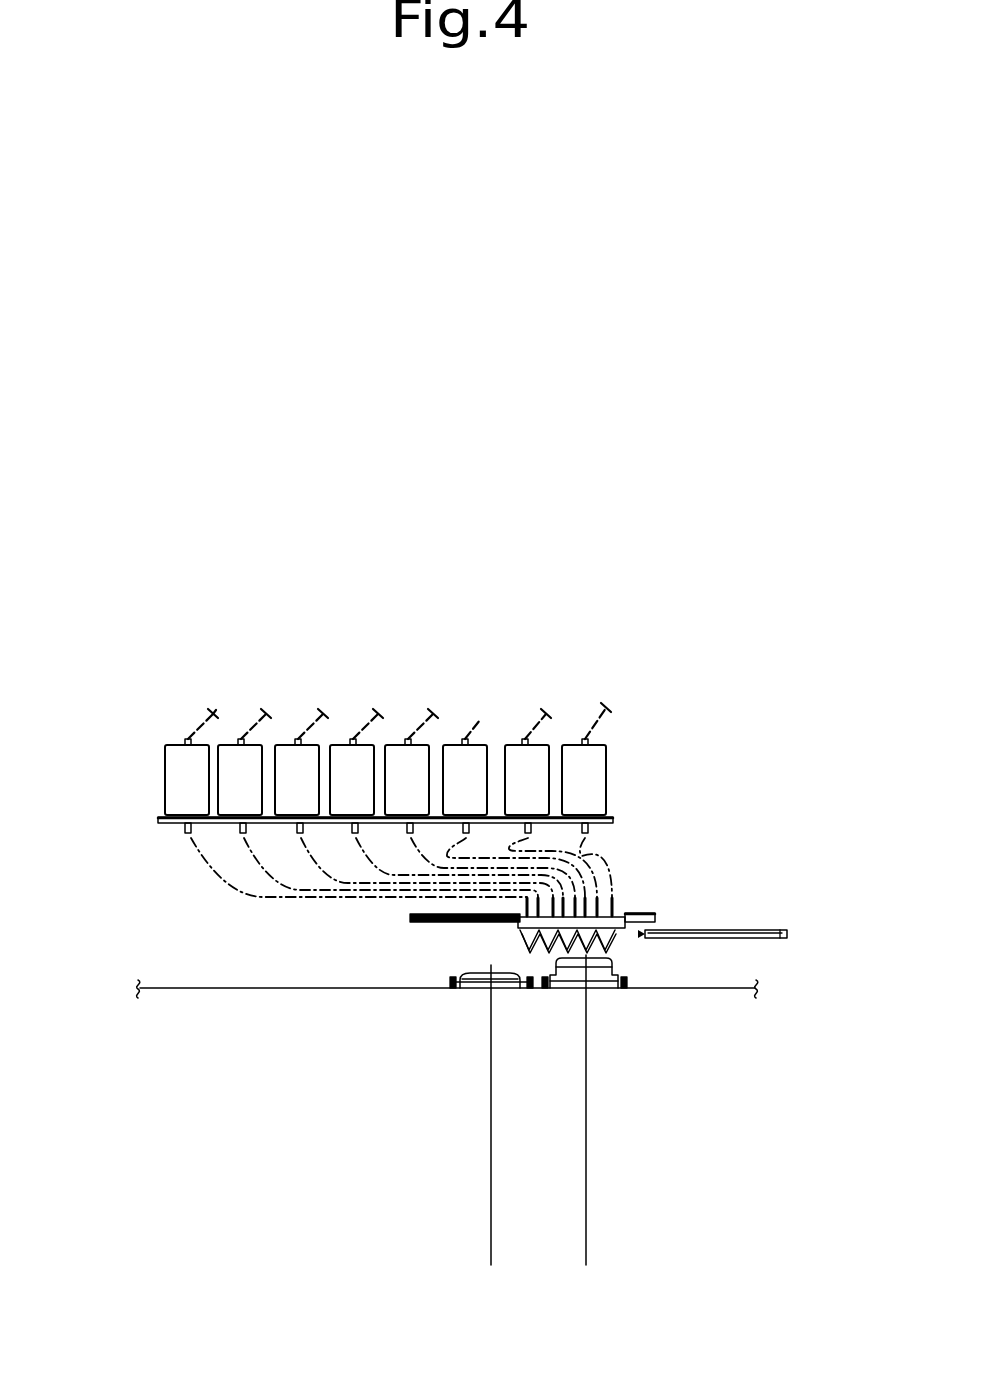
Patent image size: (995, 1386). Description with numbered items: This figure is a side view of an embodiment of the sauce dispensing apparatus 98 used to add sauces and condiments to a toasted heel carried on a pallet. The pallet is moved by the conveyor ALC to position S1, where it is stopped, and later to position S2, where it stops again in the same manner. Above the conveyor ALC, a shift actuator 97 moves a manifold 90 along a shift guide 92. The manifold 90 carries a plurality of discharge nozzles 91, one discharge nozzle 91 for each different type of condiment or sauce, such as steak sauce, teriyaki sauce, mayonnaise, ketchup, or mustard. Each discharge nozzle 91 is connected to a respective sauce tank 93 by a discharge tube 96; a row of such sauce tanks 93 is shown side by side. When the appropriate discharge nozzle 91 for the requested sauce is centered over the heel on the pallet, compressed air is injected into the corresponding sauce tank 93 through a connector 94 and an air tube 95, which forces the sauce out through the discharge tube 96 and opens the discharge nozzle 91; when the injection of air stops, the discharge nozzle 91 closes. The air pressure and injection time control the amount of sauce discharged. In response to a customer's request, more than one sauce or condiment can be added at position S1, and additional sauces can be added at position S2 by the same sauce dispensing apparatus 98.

The manifold 90 is at (600, 897).
The discharge nozzle 91 is at (618, 942).
The shift guide 92 is at (658, 917).
The sauce tank 93 is at (600, 735).
The connector 94 is at (463, 739).
The air tube 95 is at (490, 718).
The discharge tube 96 is at (600, 845).
The shift actuator 97 is at (787, 939).
The sauce dispensing apparatus 98 is at (716, 730).
The conveyor ALC is at (183, 988).
The position S1 is at (491, 1141).
The position S2 is at (584, 1136).